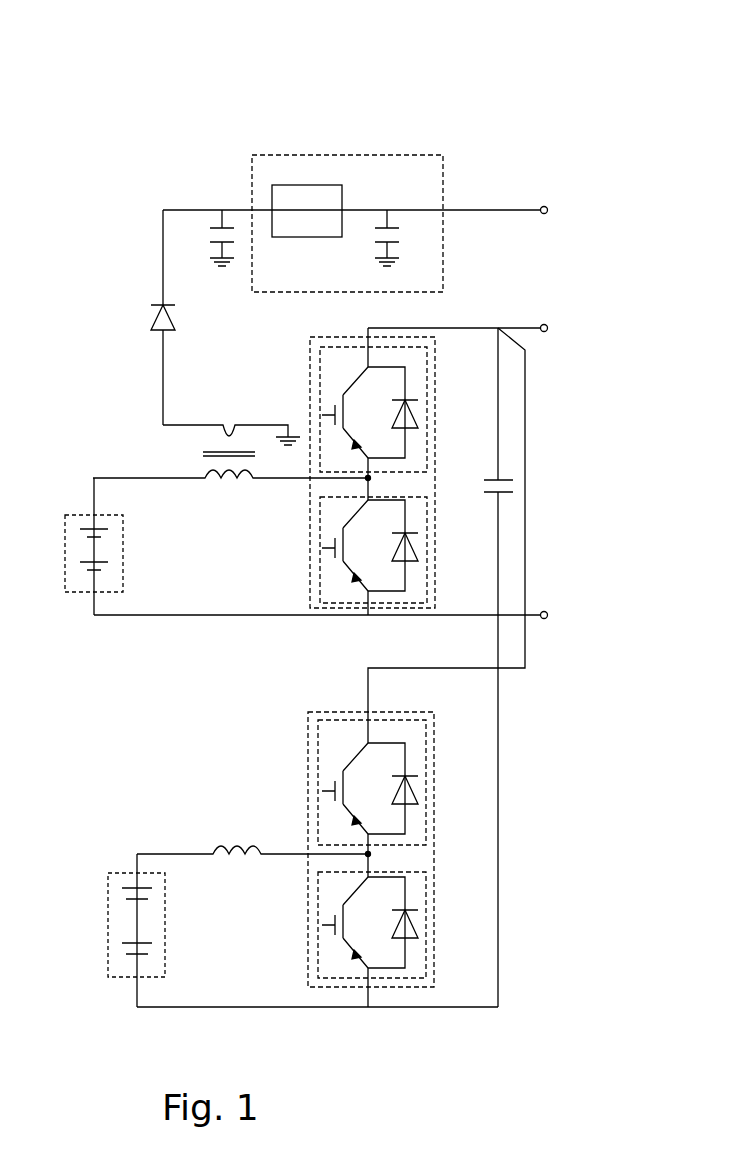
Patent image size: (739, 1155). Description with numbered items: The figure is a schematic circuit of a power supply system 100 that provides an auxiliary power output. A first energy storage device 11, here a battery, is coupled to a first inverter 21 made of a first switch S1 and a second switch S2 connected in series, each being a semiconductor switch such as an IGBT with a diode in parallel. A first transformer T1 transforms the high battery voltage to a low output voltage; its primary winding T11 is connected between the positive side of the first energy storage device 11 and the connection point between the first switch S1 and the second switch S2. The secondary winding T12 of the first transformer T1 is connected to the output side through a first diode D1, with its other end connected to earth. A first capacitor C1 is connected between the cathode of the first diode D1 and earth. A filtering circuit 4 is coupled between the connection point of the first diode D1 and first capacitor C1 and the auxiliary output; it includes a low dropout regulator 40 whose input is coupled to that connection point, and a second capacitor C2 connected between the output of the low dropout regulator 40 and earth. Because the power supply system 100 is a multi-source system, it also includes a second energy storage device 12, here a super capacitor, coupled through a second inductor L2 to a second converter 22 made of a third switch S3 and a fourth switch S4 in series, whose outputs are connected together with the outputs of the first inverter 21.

The power supply system 100 is at (432, 64).
The filtering circuit 4 is at (385, 168).
The low dropout regulator (LDO) 40 is at (295, 185).
The first energy storage device 11 is at (65, 567).
The second energy storage device 12 is at (108, 937).
The first inverter 21 is at (391, 471).
The second converter 22 is at (390, 859).
The first switch S1 is at (425, 410).
The second switch S2 is at (417, 583).
The third switch S3 is at (422, 792).
The fourth switch S4 is at (418, 965).
The first diode D1 is at (178, 317).
The first capacitor C1 is at (208, 238).
The second capacitor C2 is at (397, 238).
The first transformer T1 is at (230, 456).
The primary winding T11 is at (230, 489).
The secondary winding T12 is at (231, 424).
The second inductor L2 is at (252, 835).